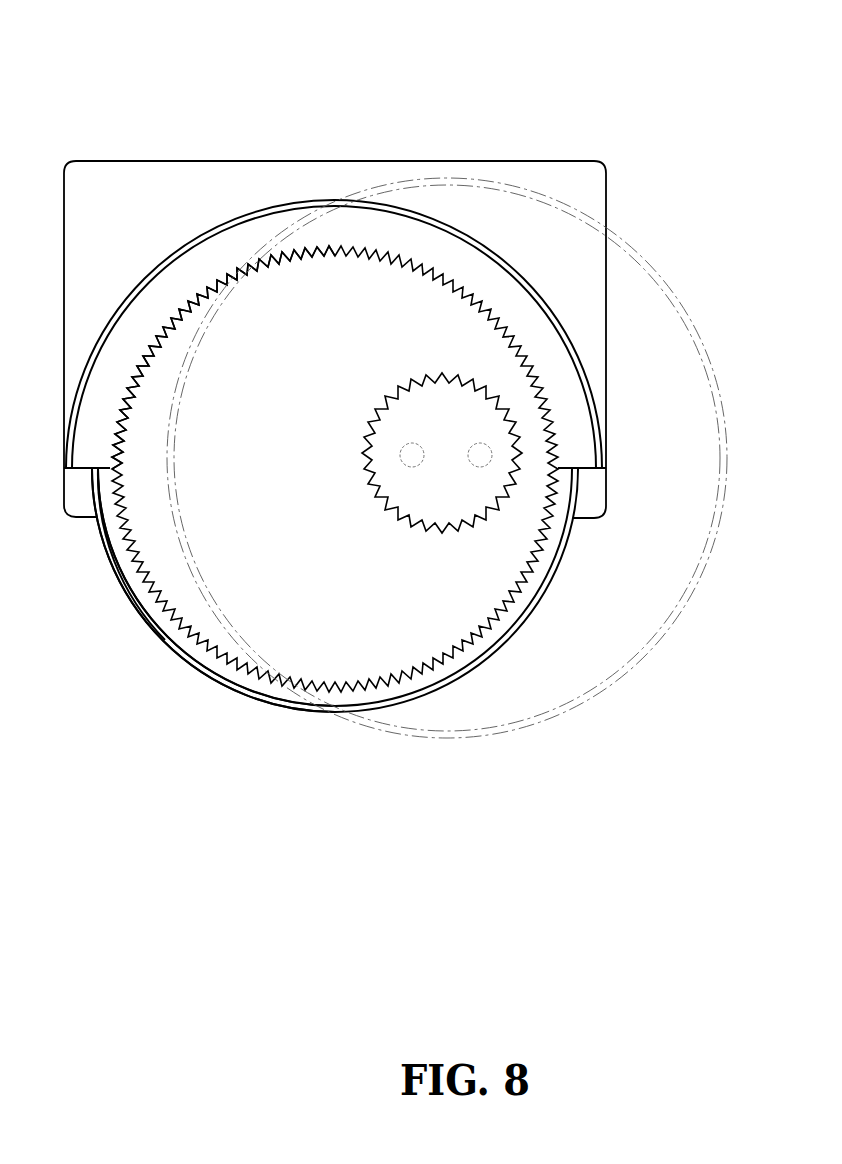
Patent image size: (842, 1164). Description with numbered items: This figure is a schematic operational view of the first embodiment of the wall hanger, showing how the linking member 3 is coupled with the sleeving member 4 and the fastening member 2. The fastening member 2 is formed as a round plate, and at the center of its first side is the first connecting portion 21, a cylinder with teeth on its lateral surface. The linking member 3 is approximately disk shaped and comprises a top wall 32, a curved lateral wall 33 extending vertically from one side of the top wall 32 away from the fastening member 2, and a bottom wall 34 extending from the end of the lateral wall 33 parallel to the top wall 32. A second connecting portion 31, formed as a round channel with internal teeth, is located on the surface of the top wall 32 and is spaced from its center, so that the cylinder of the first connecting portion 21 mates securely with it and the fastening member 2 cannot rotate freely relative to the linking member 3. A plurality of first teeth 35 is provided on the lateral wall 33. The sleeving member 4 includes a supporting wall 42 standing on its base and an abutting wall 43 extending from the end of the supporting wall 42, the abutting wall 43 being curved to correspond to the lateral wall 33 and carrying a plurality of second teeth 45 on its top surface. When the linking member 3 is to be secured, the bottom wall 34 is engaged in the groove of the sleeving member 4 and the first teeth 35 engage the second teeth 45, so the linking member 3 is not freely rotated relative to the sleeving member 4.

The fastening member 2 is at (677, 623).
The first connecting portion 21 is at (516, 497).
The linking member 3 is at (179, 674).
The second connecting portion 31 is at (486, 370).
The top wall 32 is at (150, 505).
The lateral wall 33 is at (133, 602).
The bottom wall 34 is at (120, 552).
The first teeth 35 is at (155, 605).
The sleeving member 4 is at (186, 157).
The supporting wall 42 is at (307, 200).
The abutting wall 43 is at (255, 237).
The second teeth 45 is at (157, 338).